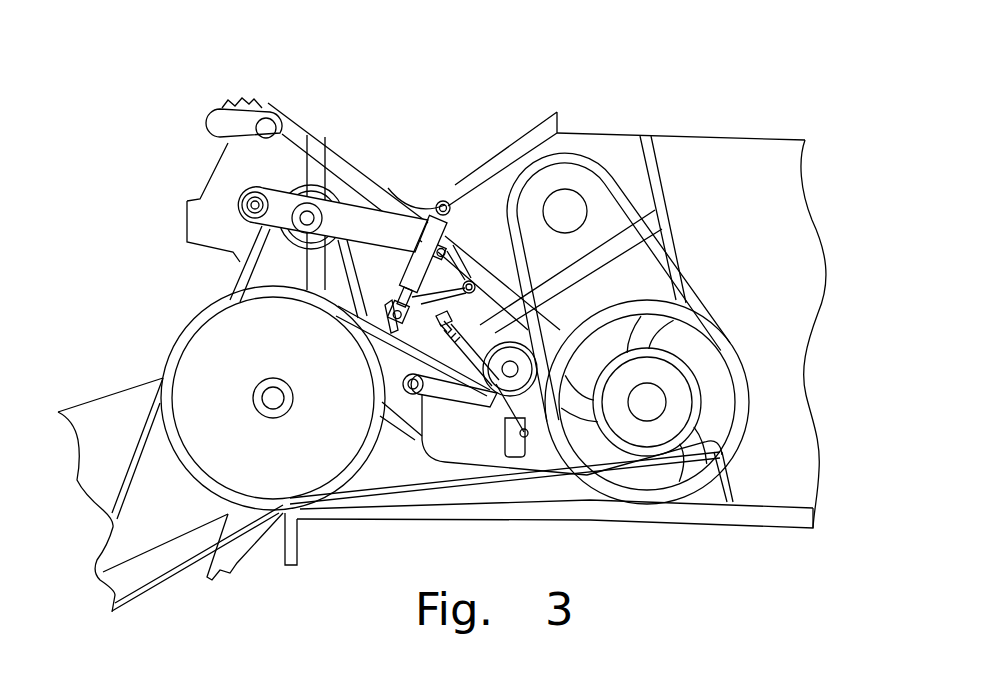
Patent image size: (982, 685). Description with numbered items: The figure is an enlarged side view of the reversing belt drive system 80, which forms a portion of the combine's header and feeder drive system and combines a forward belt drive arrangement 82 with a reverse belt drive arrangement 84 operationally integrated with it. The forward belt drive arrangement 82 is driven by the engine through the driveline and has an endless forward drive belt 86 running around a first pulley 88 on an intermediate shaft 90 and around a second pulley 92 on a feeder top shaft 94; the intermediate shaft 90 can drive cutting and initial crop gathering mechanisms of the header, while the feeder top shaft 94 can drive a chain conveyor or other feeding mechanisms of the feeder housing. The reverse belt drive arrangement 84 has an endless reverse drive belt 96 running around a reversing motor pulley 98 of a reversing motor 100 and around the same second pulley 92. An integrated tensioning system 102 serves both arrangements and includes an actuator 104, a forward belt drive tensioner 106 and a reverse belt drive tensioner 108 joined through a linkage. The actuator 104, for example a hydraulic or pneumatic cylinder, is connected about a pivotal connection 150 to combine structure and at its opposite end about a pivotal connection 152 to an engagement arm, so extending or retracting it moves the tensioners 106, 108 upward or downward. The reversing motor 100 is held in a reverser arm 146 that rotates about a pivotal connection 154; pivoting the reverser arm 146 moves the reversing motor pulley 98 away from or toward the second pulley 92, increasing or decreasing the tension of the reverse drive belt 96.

The reversing belt drive system 80 is at (192, 250).
The forward belt drive arrangement 82 is at (760, 391).
The reverse belt drive arrangement 84 is at (322, 128).
The endless forward drive belt 86 is at (490, 473).
The first pulley 88 is at (652, 437).
The intermediate shaft 90 is at (647, 403).
The second pulley 92 is at (300, 480).
The feeder top shaft 94 is at (273, 400).
The endless reverse drive belt 96 is at (352, 280).
The reversing motor pulley 98 is at (328, 188).
The reversing motor 100 is at (288, 246).
The integrated tensioning system 102 is at (467, 253).
The actuator 104 is at (424, 211).
The forward belt drive tensioner 106 is at (543, 338).
The reverse belt drive tensioner 108 is at (385, 336).
The reverser arm 146 is at (353, 233).
The pivotal connection 150 is at (444, 198).
The pivotal connection 152 is at (352, 333).
The pivotal connection 154 is at (242, 196).